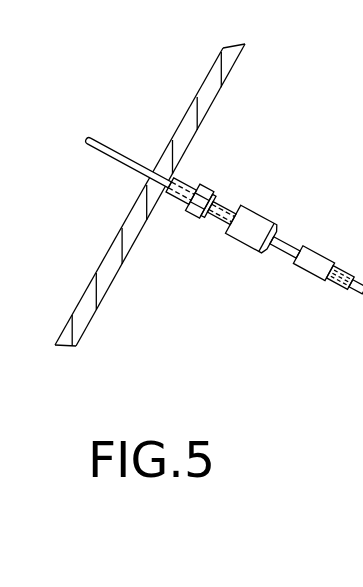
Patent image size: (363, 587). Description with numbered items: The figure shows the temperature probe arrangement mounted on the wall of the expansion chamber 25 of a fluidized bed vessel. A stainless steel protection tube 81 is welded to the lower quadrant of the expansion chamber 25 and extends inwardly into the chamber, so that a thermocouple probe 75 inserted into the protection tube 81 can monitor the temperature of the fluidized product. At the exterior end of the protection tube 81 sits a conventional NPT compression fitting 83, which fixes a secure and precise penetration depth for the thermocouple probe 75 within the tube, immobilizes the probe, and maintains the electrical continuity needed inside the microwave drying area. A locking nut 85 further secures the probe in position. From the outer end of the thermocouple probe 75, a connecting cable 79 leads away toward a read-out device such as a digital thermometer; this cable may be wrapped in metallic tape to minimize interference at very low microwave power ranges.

The expansion chamber 25 is at (215, 102).
The protection tube 81 is at (102, 141).
The compression fitting 83 is at (234, 167).
The locking nut 85 is at (281, 197).
The thermocouple probe 75 is at (329, 235).
The connecting cable 79 is at (345, 292).